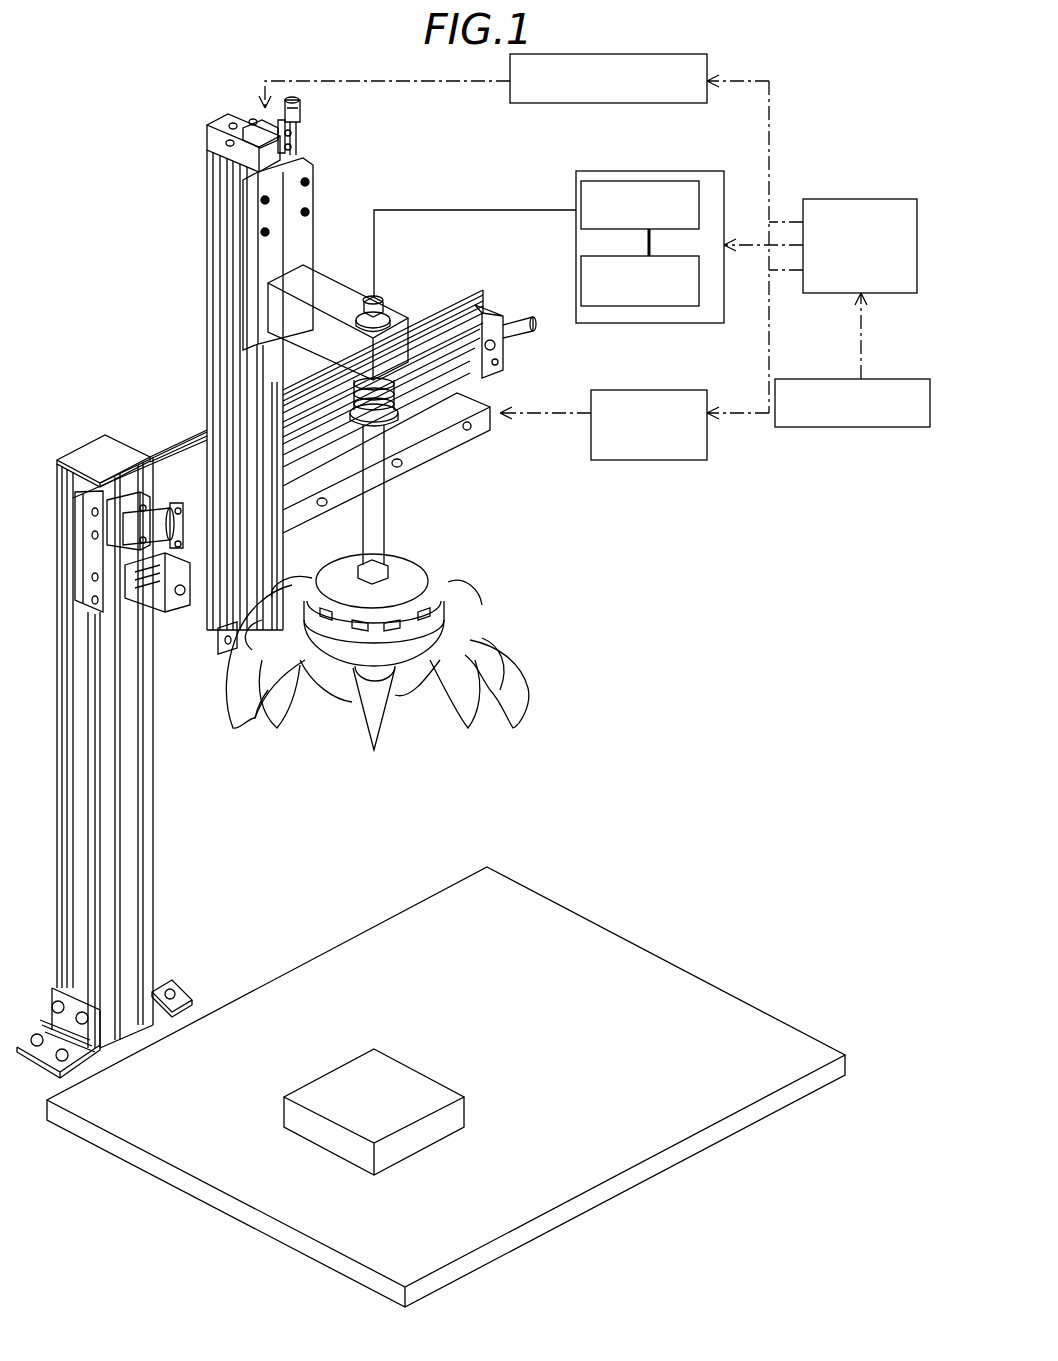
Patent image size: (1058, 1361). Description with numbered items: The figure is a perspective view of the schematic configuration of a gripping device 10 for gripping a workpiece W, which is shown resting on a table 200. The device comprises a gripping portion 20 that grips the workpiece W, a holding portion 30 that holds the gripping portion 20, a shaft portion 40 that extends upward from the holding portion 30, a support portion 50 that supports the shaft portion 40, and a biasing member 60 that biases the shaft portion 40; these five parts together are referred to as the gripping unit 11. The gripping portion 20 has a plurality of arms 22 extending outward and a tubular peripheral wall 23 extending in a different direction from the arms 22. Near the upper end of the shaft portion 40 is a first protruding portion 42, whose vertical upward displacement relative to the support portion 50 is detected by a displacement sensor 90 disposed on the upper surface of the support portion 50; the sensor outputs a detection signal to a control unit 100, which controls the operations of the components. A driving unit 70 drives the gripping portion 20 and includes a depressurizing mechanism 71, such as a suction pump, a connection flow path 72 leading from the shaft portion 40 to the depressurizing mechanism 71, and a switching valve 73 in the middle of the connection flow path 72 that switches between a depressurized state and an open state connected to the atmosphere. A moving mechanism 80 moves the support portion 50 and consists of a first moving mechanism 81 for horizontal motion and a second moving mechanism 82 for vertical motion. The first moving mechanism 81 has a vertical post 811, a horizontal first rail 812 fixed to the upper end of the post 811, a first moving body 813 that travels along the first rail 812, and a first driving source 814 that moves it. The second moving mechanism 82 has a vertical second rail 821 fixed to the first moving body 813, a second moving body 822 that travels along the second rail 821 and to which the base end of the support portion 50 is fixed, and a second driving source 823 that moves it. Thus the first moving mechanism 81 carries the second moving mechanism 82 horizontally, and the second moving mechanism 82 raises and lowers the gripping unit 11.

The gripping device 10 is at (106, 117).
The gripping unit 11 is at (511, 548).
The gripping portion 20 is at (399, 665).
The arms 22 is at (240, 710).
The tubular peripheral wall 23 is at (348, 648).
The holding portion 30 is at (418, 572).
The shaft portion 40 is at (388, 536).
The first protruding portion 42 is at (360, 310).
The support portion 50 is at (388, 312).
The biasing member 60 is at (395, 398).
The driving unit 70 is at (672, 171).
The depressurizing mechanism 71 is at (699, 283).
The connection flow path 72 is at (474, 208).
The switching valve 73 is at (699, 206).
The moving mechanism 80 is at (76, 348).
The first moving mechanism 81 is at (100, 428).
The second moving mechanism 82 is at (194, 384).
The displacement sensor 90 is at (875, 379).
The control unit 100 is at (860, 199).
The table 200 is at (735, 1000).
The post 811 is at (155, 894).
The first rail 812 is at (196, 442).
The first moving body 813 is at (212, 654).
The first driving source 814 is at (650, 391).
The second rail 821 is at (207, 200).
The second moving body 822 is at (313, 166).
The second driving source 823 is at (653, 104).
The workpiece W is at (418, 1066).